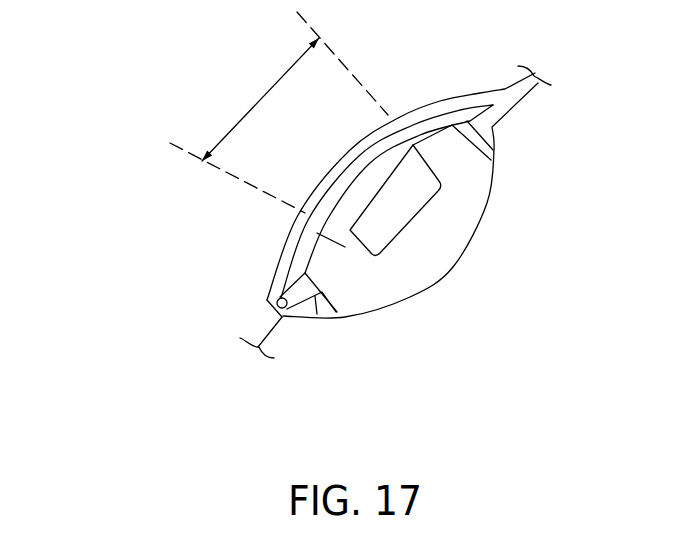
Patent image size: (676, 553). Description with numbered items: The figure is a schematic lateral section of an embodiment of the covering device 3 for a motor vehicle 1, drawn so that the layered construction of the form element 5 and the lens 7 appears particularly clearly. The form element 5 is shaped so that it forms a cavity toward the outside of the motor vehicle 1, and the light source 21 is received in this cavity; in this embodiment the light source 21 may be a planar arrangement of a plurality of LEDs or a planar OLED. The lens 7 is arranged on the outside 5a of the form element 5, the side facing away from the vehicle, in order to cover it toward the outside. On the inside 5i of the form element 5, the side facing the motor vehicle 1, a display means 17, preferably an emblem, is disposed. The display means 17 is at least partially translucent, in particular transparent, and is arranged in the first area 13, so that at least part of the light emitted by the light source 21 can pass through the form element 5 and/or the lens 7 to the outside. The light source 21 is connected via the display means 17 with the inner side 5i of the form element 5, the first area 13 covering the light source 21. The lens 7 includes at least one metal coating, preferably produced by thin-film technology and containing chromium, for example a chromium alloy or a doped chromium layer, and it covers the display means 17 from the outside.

The motor vehicle 1 is at (286, 358).
The covering device 3 is at (147, 62).
The form element 5 is at (467, 106).
The outside of the form element 5a is at (275, 265).
The inside of the form element 5i is at (440, 141).
The lens 7 is at (413, 112).
The first area 13 is at (262, 100).
The display means 17 is at (350, 227).
The light source 21 is at (392, 222).